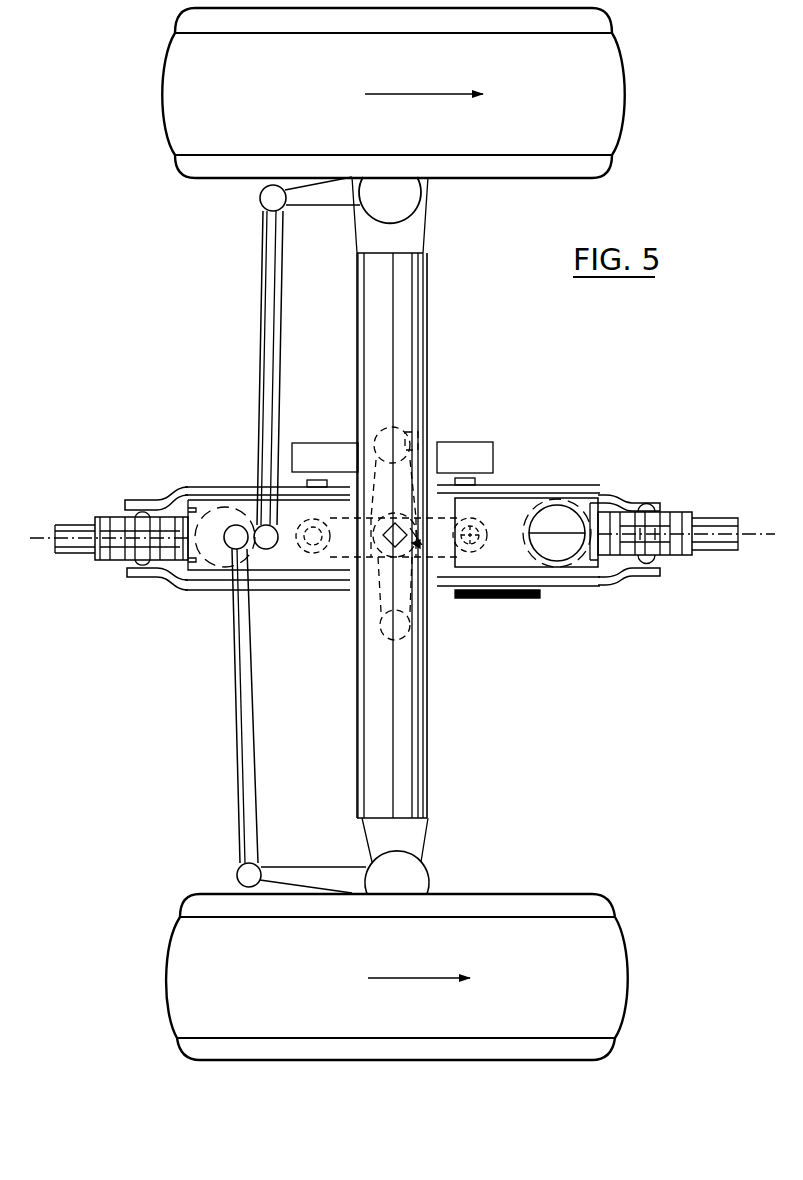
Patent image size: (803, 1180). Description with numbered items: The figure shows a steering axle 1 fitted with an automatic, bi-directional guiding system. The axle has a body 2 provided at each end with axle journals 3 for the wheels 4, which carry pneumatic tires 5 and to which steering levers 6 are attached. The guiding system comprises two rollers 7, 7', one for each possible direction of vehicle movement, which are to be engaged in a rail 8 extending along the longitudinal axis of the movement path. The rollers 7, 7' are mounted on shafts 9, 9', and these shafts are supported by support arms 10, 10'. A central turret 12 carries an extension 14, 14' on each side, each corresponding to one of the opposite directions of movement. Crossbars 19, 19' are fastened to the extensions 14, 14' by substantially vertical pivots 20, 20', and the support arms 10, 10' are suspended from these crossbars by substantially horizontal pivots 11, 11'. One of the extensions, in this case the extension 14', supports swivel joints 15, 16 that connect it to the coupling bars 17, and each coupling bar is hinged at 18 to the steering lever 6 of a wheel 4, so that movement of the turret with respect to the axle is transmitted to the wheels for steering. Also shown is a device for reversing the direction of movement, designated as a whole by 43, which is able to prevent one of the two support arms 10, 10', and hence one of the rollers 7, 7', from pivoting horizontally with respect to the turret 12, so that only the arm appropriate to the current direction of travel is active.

The steering axle 1 is at (402, 347).
The body 2 is at (403, 301).
The axle journal 3 is at (407, 200).
The wheel 4 is at (522, 168).
The pneumatic tire 5 is at (608, 92).
The steering lever 6 is at (340, 192).
The roller 7 is at (686, 475).
The roller 7' is at (374, 589).
The rail 8 is at (75, 558).
The shaft 9 is at (589, 478).
The shaft 9' is at (141, 585).
The support arm 10 is at (618, 490).
The support arm 10' is at (165, 570).
The horizontal pivot 11 is at (518, 499).
The horizontal pivot 11' is at (271, 485).
The turret 12 is at (443, 440).
The extension 14 is at (519, 582).
The extension 14' is at (269, 576).
The swivel joint 15 is at (258, 523).
The swivel joint 16 is at (222, 522).
The coupling bar 17 is at (268, 300).
The hinge 18 is at (262, 196).
The crossbar 19 is at (547, 482).
The crossbar 19' is at (254, 473).
The vertical pivot 20 is at (509, 592).
The vertical pivot 20' is at (318, 586).
The device for reversing the direction of movement 43 is at (436, 587).